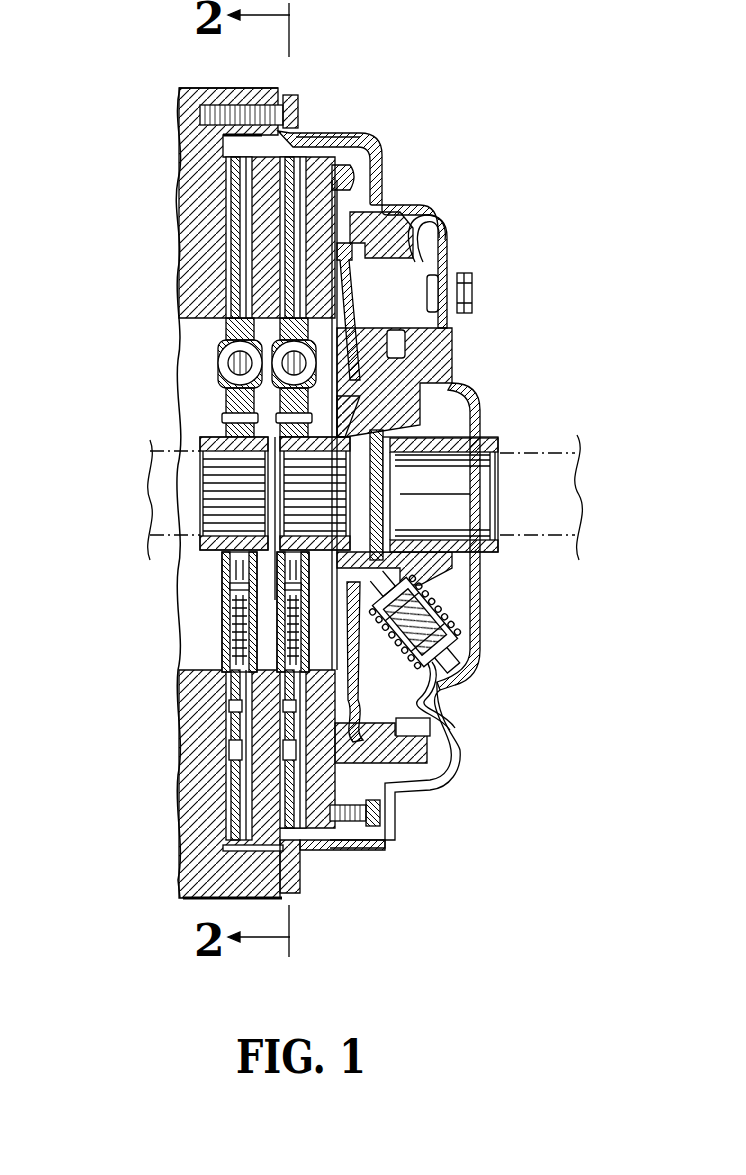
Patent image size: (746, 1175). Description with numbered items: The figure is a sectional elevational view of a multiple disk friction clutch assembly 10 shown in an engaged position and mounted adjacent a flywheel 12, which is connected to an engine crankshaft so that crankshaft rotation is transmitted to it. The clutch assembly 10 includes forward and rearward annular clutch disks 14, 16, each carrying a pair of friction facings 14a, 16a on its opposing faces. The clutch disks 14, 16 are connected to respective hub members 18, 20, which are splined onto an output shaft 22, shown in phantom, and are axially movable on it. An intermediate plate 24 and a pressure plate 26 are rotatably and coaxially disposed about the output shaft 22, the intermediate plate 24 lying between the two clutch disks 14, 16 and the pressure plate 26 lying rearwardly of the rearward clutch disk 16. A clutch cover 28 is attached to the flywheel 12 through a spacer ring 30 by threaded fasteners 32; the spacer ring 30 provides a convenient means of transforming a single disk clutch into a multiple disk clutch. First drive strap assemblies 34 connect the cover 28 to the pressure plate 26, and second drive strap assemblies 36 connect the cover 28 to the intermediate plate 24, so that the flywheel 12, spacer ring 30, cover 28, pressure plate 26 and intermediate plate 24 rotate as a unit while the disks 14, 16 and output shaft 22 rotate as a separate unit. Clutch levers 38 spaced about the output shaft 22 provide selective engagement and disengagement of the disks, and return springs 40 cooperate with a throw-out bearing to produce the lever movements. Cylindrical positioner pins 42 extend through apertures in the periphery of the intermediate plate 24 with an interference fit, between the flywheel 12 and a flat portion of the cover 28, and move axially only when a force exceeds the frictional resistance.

The multiple disk friction clutch assembly 10 is at (494, 87).
The flywheel 12 is at (190, 701).
The forward annular clutch disk 14 is at (233, 193).
The friction facings 14a is at (240, 175).
The rearward annular clutch disk 16 is at (381, 185).
The friction facings 16a is at (340, 138).
The hub member 18 is at (240, 522).
The hub member 20 is at (298, 425).
The output shaft 22 is at (562, 455).
The intermediate plate 24 is at (262, 753).
The pressure plate 26 is at (345, 720).
The clutch cover 28 is at (480, 568).
The spacer ring 30 is at (245, 90).
The threaded fasteners 32 is at (300, 108).
The first drive strap assemblies 34 is at (392, 812).
The second drive strap assemblies 36 is at (320, 877).
The clutch levers 38 is at (357, 280).
The return springs 40 is at (440, 607).
The positioner pins 42 is at (188, 841).